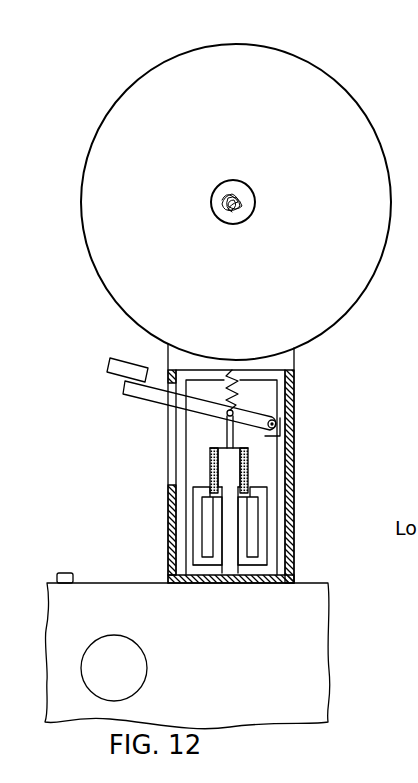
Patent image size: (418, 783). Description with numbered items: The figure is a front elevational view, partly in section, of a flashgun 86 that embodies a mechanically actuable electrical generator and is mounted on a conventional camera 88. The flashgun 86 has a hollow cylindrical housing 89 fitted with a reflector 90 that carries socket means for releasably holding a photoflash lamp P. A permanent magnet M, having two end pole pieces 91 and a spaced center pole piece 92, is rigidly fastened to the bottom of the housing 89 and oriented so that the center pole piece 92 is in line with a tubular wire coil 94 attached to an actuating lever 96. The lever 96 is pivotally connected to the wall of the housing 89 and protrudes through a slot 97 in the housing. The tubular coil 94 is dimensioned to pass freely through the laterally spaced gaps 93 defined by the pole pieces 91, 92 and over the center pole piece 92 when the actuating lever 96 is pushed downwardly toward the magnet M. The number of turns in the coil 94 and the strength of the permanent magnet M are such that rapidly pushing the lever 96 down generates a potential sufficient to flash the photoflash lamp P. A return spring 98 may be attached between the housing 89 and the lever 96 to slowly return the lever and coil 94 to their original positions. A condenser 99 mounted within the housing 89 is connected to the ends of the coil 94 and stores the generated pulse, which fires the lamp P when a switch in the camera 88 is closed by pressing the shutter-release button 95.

The reflector 90 is at (374, 132).
The photoflash lamp P is at (243, 191).
The flashgun 86 is at (44, 319).
The camera 88 is at (322, 648).
The shutter-release button 95 is at (63, 572).
The end pole pieces 91 is at (204, 487).
The slot 97 is at (171, 486).
The condenser 99 is at (194, 421).
The return spring 98 is at (238, 392).
The actuating lever 96 is at (134, 394).
The housing 89 is at (294, 414).
The tubular wire coil 94 is at (250, 466).
The gaps 93 is at (211, 498).
The center pole piece 92 is at (228, 547).
The permanent magnet M is at (215, 568).